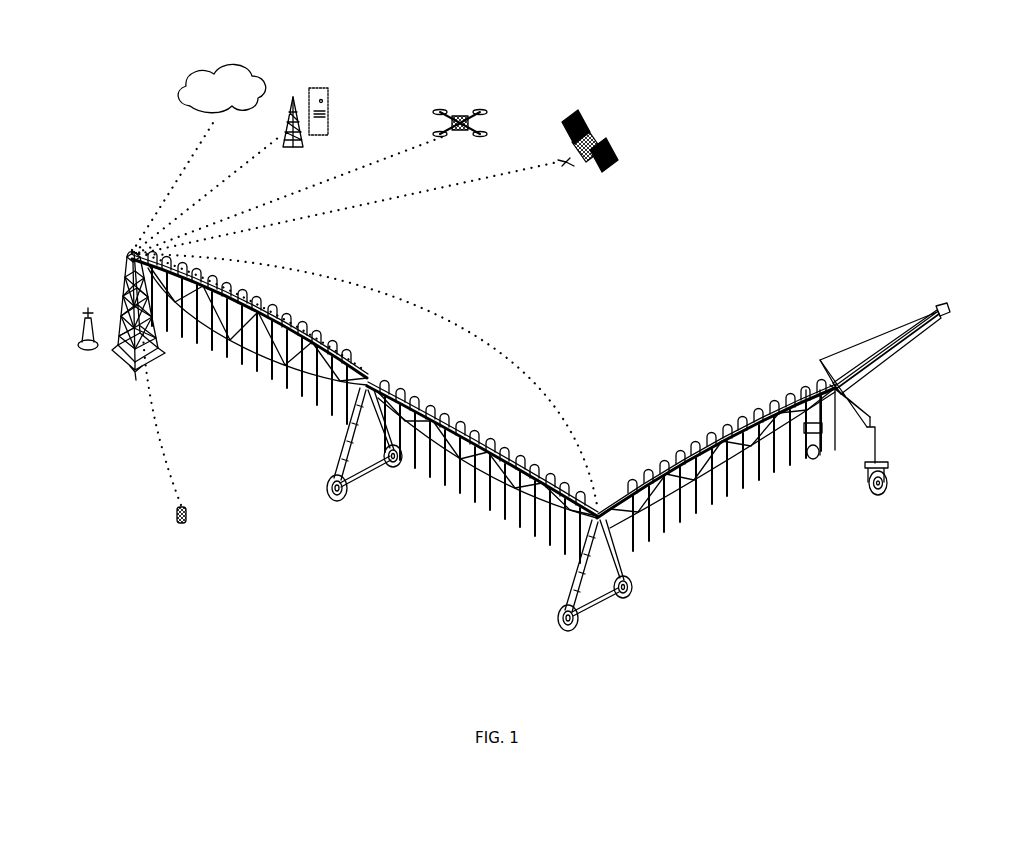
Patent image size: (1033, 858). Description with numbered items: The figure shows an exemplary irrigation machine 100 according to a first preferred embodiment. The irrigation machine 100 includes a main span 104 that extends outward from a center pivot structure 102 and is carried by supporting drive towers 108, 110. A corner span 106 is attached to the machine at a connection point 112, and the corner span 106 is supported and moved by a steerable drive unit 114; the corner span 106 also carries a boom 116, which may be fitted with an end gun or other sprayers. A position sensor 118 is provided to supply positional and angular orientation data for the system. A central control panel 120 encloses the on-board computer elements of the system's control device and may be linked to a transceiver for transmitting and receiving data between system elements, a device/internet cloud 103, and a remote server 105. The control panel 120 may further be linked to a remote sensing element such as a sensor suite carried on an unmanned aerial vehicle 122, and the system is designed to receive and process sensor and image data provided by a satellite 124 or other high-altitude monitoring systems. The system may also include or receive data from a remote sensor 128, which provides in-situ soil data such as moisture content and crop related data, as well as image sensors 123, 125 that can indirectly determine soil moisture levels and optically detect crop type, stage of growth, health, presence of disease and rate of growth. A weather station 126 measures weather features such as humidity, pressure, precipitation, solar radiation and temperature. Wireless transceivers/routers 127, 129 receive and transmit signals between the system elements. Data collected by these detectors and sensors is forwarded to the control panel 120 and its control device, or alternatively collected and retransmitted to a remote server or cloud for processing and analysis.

The irrigation machine 100 is at (735, 176).
The center pivot structure 102 is at (122, 268).
The device/internet cloud 103 is at (203, 100).
The main span 104 is at (410, 445).
The remote server 105 is at (327, 85).
The corner span 106 is at (666, 447).
The drive tower 108 is at (385, 458).
The drive tower 110 is at (568, 590).
The connection point 112 is at (618, 548).
The steerable drive unit 114 is at (872, 420).
The boom 116 is at (887, 345).
The position sensor 118 is at (833, 385).
The control panel 120 is at (118, 320).
The unmanned aerial vehicle 122 is at (470, 103).
The image sensor 123 is at (363, 400).
The satellite 124 is at (600, 137).
The image sensor 125 is at (845, 412).
The weather station 126 is at (78, 346).
The wireless transceiver/router 127 is at (360, 388).
The remote sensor 128 is at (177, 523).
The wireless transceiver/router 129 is at (590, 560).